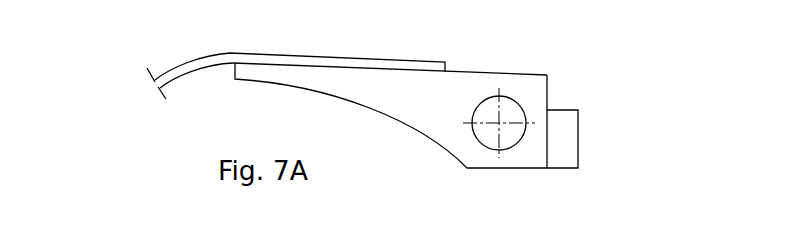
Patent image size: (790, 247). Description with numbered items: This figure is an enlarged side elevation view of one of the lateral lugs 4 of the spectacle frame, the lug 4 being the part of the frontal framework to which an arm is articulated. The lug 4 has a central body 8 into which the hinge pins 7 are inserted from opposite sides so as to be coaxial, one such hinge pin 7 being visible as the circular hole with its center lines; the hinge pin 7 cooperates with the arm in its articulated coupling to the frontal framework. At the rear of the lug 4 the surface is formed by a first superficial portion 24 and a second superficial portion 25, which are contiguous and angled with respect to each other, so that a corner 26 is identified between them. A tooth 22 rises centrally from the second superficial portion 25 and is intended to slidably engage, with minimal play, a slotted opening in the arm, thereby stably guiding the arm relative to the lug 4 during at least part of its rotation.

The lateral lug 4 is at (183, 50).
The first superficial portion 24 is at (495, 72).
The central body 8 is at (475, 160).
The corner 26 is at (552, 72).
The second superficial portion 25 is at (552, 98).
The tooth 22 is at (565, 153).
The hinge pin 7 is at (510, 137).